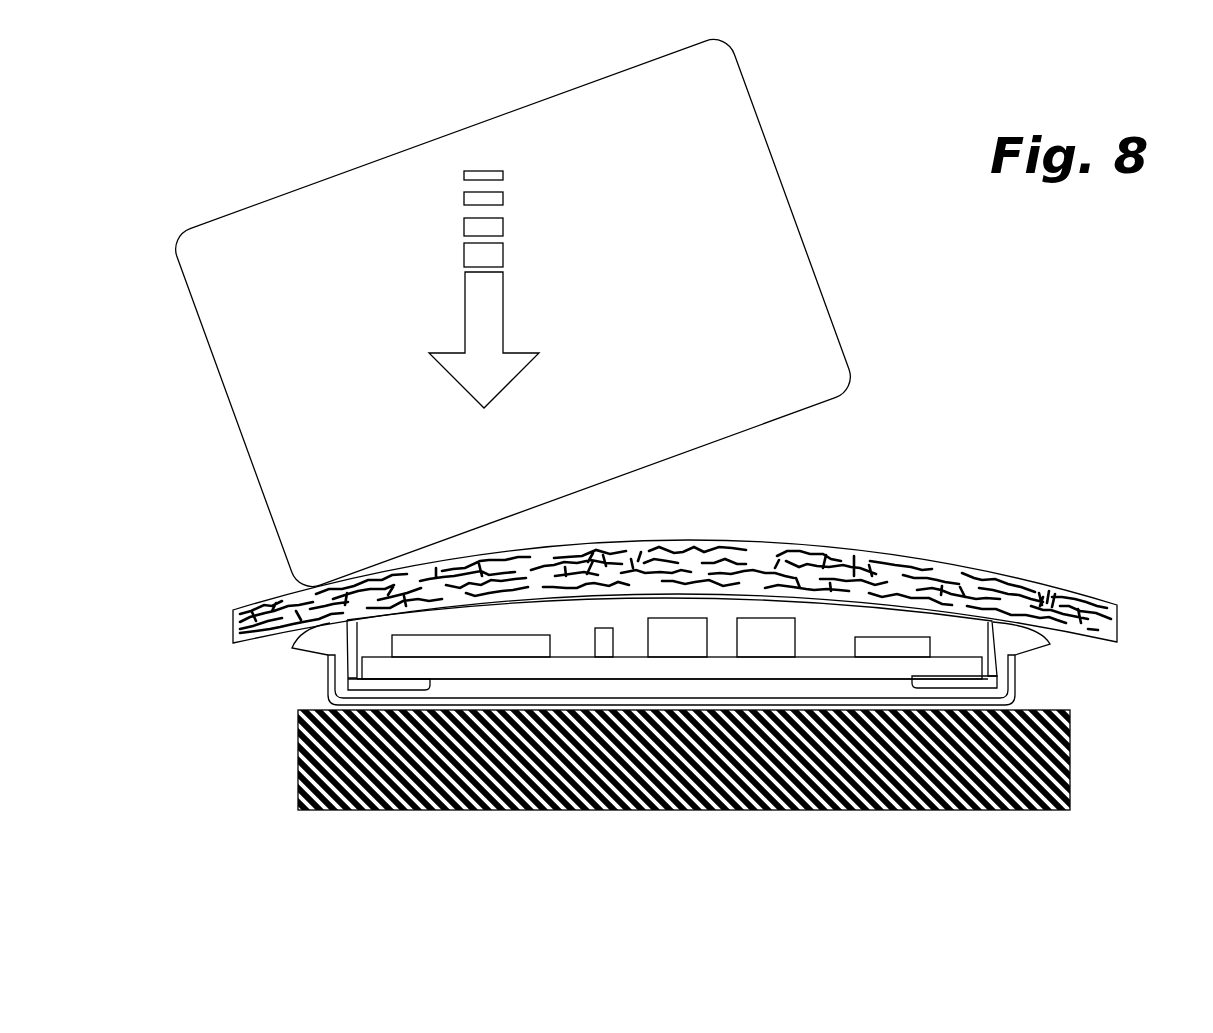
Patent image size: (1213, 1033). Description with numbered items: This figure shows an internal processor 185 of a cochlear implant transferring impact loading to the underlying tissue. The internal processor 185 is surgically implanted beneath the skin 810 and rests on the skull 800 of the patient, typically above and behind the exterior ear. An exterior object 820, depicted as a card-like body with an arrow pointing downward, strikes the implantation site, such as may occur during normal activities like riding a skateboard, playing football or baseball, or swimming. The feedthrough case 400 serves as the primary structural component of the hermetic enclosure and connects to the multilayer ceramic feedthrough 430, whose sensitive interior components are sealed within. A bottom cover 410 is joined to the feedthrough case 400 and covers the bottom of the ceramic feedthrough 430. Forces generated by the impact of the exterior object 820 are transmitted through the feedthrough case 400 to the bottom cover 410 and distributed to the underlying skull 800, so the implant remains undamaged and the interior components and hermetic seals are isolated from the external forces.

The exterior object 820 is at (512, 312).
The skin 810 is at (1065, 600).
The feedthrough case 400 is at (320, 648).
The bottom cover 410 is at (327, 688).
The multilayer ceramic feedthrough 430 is at (957, 670).
The skull 800 is at (684, 760).
The internal processor 185 is at (1096, 663).